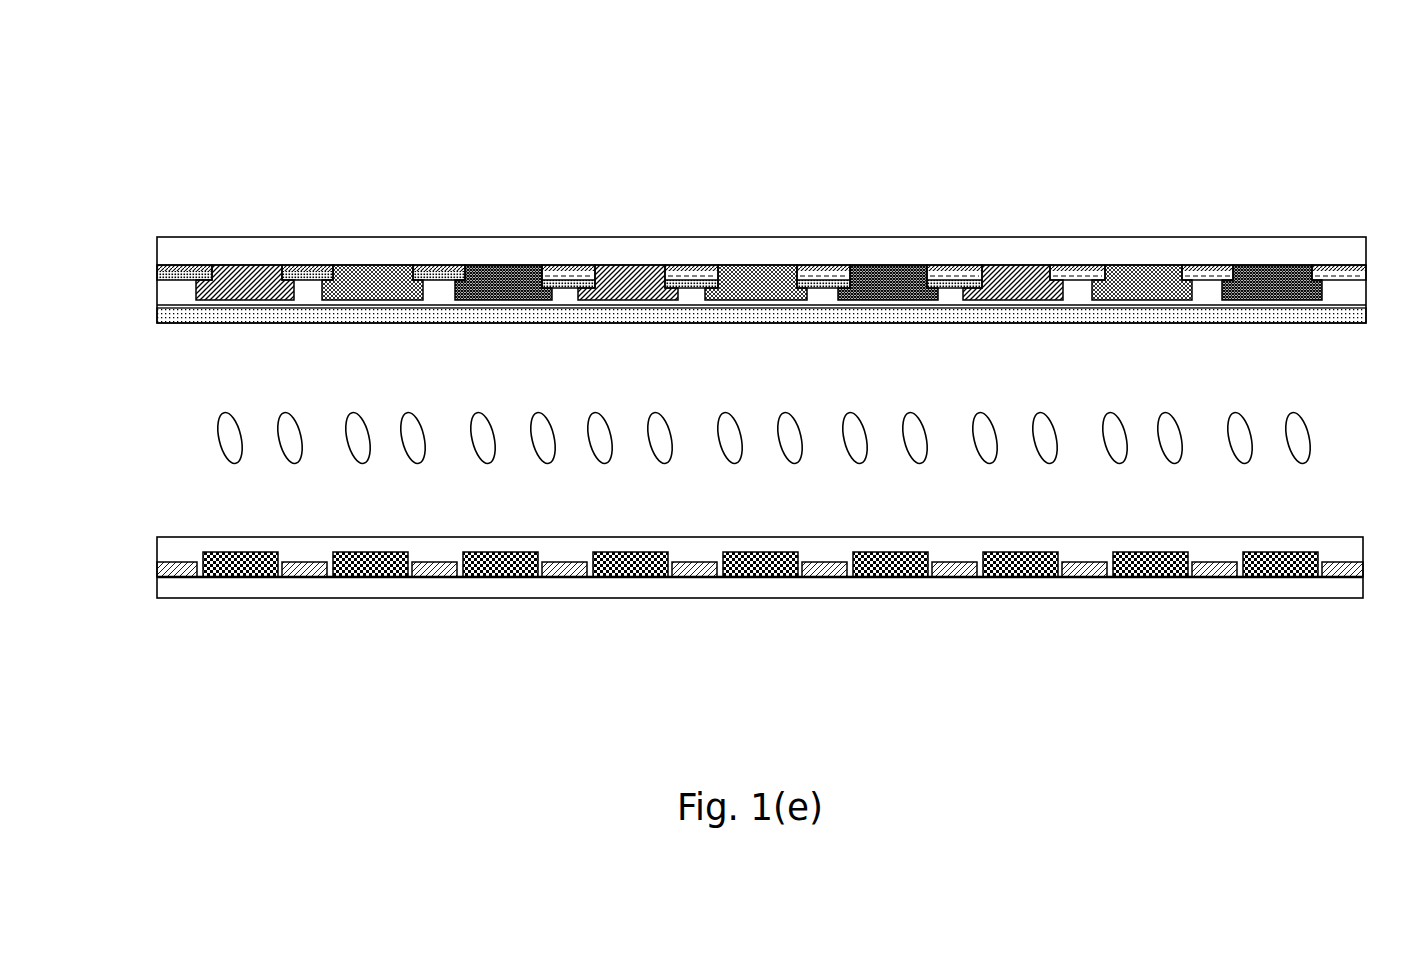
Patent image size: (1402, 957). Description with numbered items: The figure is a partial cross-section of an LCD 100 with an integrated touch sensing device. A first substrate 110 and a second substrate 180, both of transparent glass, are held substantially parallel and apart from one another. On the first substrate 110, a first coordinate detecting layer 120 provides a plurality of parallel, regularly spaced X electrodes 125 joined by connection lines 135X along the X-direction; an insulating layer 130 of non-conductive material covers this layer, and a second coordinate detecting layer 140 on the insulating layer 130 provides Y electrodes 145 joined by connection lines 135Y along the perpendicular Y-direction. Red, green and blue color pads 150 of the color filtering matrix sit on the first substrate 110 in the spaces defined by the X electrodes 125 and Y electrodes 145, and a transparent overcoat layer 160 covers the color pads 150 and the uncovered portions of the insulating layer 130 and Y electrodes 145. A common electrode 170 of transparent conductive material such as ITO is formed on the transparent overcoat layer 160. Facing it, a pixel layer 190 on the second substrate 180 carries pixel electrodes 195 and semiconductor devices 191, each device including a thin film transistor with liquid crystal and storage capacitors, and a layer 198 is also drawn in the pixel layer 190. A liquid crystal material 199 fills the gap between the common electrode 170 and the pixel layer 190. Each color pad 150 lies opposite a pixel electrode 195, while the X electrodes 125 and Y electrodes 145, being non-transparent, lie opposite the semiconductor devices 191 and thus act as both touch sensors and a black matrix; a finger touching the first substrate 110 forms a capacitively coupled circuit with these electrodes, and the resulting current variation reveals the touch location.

The LCD 100 is at (771, 58).
The first substrate 110 is at (830, 256).
The first coordinate detecting layer 120 is at (531, 266).
The X electrodes 125 is at (1087, 281).
The insulating layer 130 is at (303, 281).
The connection lines 135X is at (950, 289).
The connection lines 135Y is at (700, 289).
The second coordinate detecting layer 140 is at (147, 276).
The Y electrodes 145 is at (442, 281).
The color pads 150 is at (635, 265).
The transparent overcoat layer 160 is at (787, 301).
The common electrode 170 is at (858, 322).
The second substrate 180 is at (857, 590).
The pixel layer 190 is at (145, 565).
The semiconductor devices 191 is at (571, 578).
The pixel electrodes 195 is at (645, 566).
The insulating layer 198 is at (830, 550).
The liquid crystal material 199 is at (222, 453).